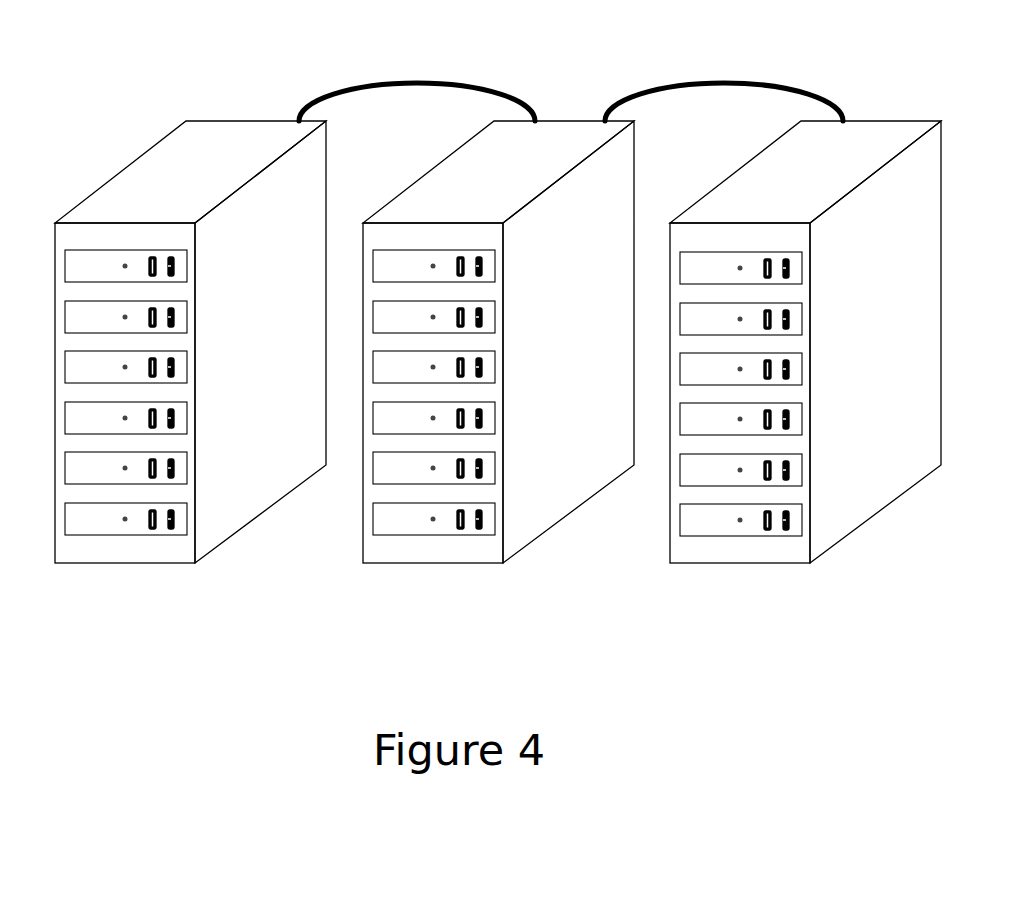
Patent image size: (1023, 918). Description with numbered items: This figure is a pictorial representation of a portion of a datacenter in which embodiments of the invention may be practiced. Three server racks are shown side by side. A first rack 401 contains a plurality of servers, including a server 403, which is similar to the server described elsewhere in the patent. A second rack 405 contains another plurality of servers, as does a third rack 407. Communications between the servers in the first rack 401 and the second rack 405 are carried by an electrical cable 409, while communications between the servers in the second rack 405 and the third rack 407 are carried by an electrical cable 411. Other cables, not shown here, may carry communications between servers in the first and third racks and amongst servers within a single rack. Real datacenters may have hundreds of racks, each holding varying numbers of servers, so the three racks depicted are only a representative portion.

The first rack 401 is at (827, 325).
The server 403 is at (803, 268).
The second rack 405 is at (557, 122).
The third rack 407 is at (204, 121).
The electrical cable 409 is at (751, 84).
The electrical cable 411 is at (453, 84).